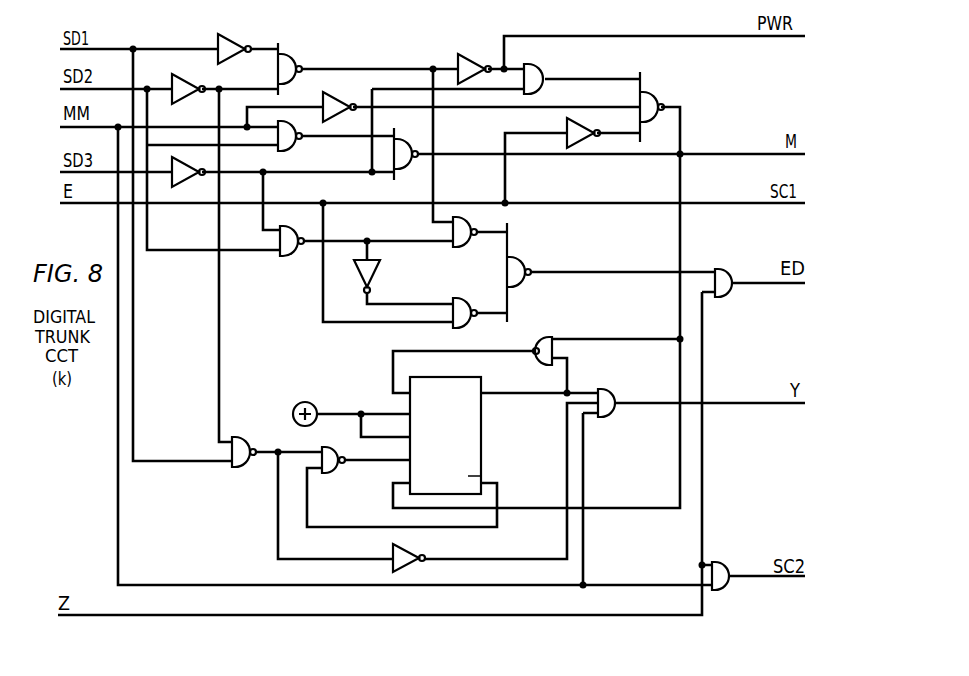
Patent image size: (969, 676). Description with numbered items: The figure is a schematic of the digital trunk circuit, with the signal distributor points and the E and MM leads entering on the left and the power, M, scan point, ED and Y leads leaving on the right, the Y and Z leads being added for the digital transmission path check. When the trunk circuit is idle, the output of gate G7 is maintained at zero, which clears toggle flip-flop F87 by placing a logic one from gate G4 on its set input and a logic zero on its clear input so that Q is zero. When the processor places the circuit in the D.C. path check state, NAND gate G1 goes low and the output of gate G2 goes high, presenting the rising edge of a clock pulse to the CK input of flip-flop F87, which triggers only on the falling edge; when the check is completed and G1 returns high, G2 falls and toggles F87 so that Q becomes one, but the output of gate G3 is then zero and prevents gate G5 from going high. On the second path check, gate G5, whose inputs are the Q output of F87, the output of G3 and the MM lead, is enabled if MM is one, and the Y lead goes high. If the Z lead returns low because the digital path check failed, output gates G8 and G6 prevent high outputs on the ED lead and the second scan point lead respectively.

The NAND gate G1 is at (244, 442).
The gate G2 is at (333, 472).
The gate G3 is at (409, 552).
The gate G4 is at (546, 340).
The gate G5 is at (611, 392).
The output gate G6 is at (722, 564).
The gate G7 is at (657, 107).
The output gate G8 is at (723, 271).
The toggle flip-flop F87 is at (445, 435).